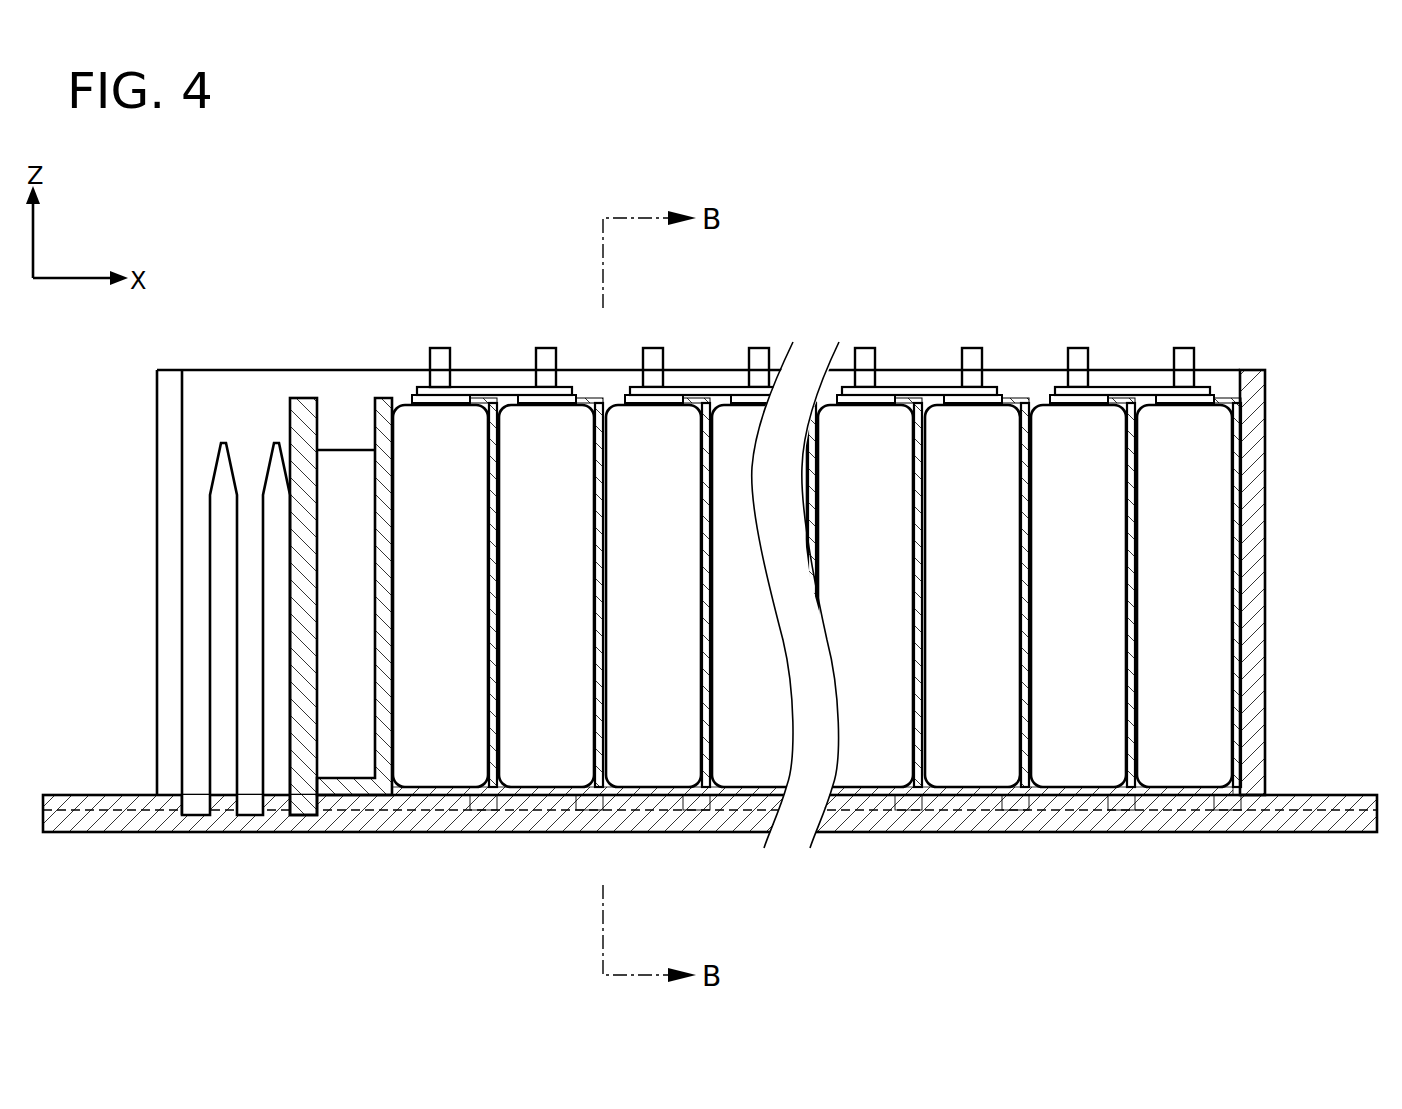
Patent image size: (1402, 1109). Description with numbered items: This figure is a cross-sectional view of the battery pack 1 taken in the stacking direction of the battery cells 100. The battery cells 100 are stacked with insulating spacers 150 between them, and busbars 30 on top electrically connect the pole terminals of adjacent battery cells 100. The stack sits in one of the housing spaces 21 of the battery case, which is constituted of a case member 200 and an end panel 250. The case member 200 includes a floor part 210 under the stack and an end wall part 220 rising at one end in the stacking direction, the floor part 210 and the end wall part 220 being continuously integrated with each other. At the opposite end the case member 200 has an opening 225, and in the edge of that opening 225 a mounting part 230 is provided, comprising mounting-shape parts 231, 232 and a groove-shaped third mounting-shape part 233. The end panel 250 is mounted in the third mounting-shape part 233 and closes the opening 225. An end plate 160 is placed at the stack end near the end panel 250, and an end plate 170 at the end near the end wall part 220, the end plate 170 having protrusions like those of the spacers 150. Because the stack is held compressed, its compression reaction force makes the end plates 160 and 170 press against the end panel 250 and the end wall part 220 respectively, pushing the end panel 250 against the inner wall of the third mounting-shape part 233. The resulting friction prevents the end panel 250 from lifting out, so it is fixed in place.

The battery pack 1 is at (1022, 276).
The housing space 21 is at (1223, 385).
The busbar 30 is at (497, 392).
The battery cell 100 is at (425, 768).
The spacer 150 is at (482, 790).
The end plate 160 is at (345, 790).
The end plate 170 is at (1233, 788).
The case member 200 is at (985, 828).
The floor part 210 is at (672, 827).
The end wall part 220 is at (1252, 687).
The opening 225 is at (168, 497).
The mounting part 230 is at (223, 408).
The first leg 231 is at (186, 783).
The second leg 232 is at (236, 782).
The third mounting-shape part 233 is at (290, 782).
The end panel 250 is at (313, 400).